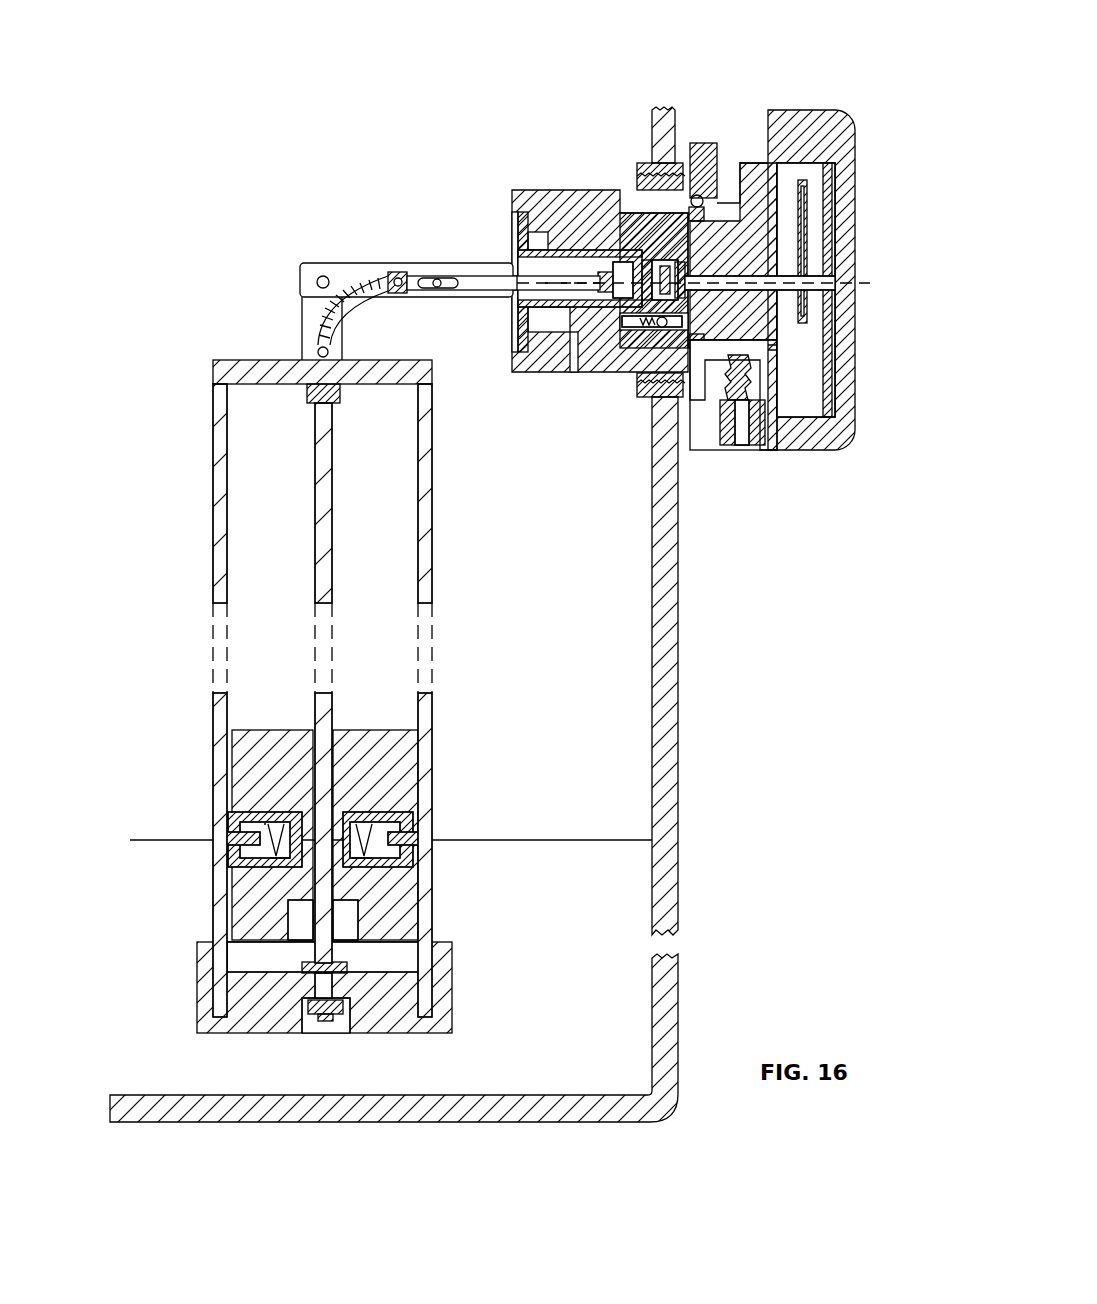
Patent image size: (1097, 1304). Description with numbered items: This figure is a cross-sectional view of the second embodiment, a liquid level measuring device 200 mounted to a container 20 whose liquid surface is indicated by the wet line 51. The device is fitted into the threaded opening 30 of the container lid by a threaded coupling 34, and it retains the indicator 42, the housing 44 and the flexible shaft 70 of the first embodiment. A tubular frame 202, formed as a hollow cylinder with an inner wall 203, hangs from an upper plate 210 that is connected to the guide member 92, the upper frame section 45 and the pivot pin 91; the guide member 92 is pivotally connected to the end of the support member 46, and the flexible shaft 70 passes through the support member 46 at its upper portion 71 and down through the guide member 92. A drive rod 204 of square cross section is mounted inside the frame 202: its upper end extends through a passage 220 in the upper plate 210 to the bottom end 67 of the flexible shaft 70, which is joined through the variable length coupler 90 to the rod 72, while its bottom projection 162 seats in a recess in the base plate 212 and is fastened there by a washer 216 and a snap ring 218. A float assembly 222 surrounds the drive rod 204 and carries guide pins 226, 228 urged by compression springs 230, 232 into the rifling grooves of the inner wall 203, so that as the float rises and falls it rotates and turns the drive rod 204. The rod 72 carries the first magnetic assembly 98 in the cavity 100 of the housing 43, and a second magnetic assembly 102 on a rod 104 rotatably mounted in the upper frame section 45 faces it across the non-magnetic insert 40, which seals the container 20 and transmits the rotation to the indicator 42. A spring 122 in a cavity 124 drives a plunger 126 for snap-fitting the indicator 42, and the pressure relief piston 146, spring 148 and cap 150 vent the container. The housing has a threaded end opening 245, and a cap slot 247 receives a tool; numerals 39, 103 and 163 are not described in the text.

The container 20 is at (678, 623).
The opening 30 is at (645, 415).
The threaded coupling 34 is at (640, 385).
The shaft 39 is at (850, 283).
The insert 40 is at (590, 245).
The indicator 42 is at (828, 482).
The housing 43 is at (540, 240).
The housing 44 is at (590, 265).
The upper frame section 45 is at (800, 110).
The support member 46 is at (375, 290).
The wet line 51 is at (612, 840).
The bottom end 67 is at (312, 348).
The flexible shaft 70 is at (340, 265).
The upper portion 71 is at (365, 285).
The rod 72 is at (565, 290).
The variable length coupler 90 is at (430, 278).
The pivot pin 91 is at (300, 276).
The guide member 92 is at (302, 300).
The first magnetic assembly 98 is at (612, 300).
The cavity 100 is at (557, 250).
The second magnetic assembly 102 is at (632, 255).
The seal 103 is at (690, 298).
The rod 104 is at (820, 245).
The spring 122 is at (755, 200).
The cavity 124 is at (790, 300).
The plunger 126 is at (700, 190).
The piston 146 is at (742, 445).
The spring 148 is at (760, 445).
The cap 150 is at (735, 445).
The bottom projection 162 is at (313, 992).
The bolt head 163 is at (338, 1022).
The liquid level measuring device 200 is at (797, 515).
The tubular frame 202 is at (432, 555).
The inner wall 203 is at (418, 723).
The drive rod 204 is at (317, 713).
The upper plate 210 is at (392, 360).
The base plate 212 is at (378, 1033).
The washer 216 is at (307, 970).
The snap ring 218 is at (345, 1010).
The passage 220 is at (315, 385).
The float assembly 222 is at (195, 742).
The guide pin 226 is at (245, 865).
The guide pin 228 is at (400, 868).
The compression spring 230 is at (245, 830).
The compression spring 232 is at (400, 835).
The threaded end opening 245 is at (712, 205).
The slot 247 is at (705, 380).